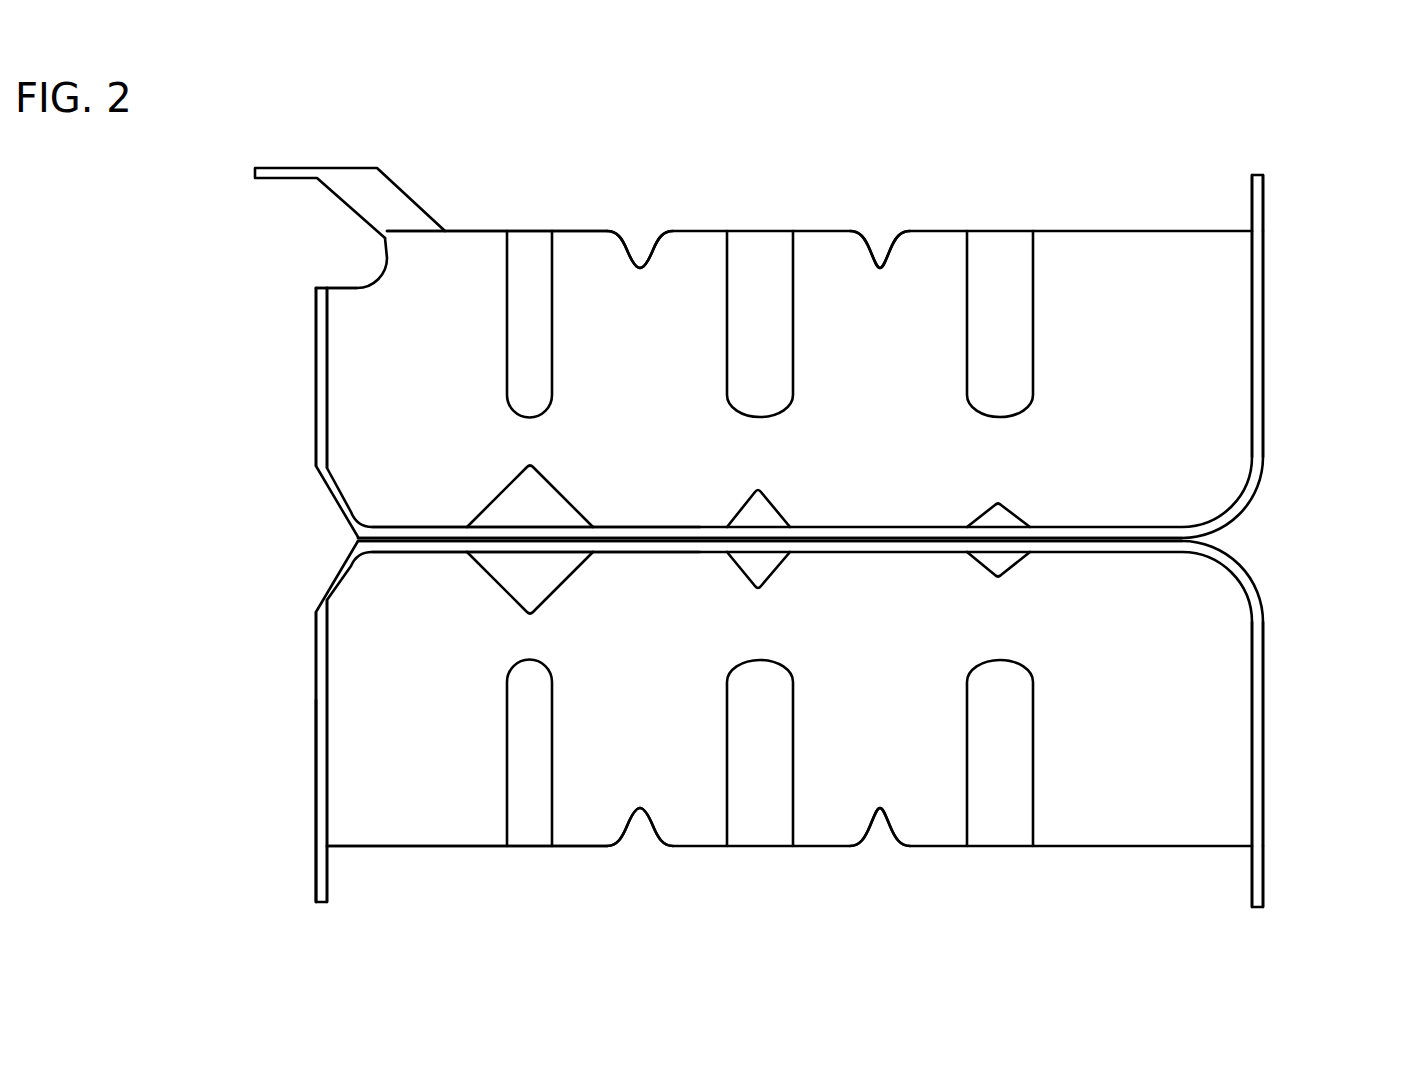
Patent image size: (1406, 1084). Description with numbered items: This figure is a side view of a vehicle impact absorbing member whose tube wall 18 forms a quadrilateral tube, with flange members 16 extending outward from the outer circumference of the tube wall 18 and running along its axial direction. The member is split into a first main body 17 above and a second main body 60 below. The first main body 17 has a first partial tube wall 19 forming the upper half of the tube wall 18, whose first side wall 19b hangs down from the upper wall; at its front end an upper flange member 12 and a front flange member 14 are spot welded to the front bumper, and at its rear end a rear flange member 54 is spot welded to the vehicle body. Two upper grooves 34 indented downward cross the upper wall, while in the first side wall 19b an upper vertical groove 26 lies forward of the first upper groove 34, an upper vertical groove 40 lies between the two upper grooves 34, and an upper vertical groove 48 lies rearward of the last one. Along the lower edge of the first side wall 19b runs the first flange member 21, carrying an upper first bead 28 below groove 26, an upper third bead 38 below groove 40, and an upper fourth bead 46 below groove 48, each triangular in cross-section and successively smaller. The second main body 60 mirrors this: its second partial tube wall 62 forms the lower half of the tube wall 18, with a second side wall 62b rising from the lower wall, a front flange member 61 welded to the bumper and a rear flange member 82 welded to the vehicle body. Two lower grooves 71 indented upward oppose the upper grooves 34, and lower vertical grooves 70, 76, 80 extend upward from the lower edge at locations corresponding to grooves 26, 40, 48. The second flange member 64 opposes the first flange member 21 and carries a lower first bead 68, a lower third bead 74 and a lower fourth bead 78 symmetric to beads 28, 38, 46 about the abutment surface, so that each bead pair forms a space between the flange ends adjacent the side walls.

The upper flange member 12 is at (288, 173).
The front flange member 14 is at (322, 395).
The flange members 16 is at (1121, 516).
The first main body 17 is at (295, 298).
The tube wall 18 is at (1357, 660).
The first partial tube wall 19 is at (447, 228).
The first side wall 19b is at (360, 353).
The first flange member 21 is at (387, 531).
The upper vertical groove 26 is at (508, 280).
The upper first bead 28 is at (570, 502).
The upper groove 34 is at (875, 250).
The upper third bead 38 is at (785, 512).
The upper vertical groove 40 is at (727, 280).
The upper fourth bead 46 is at (1025, 512).
The upper vertical groove 48 is at (968, 280).
The rear flange member 54 is at (1257, 202).
The second main body 60 is at (302, 888).
The front flange member 61 is at (323, 828).
The second partial tube wall 62 is at (352, 733).
The second side wall 62b is at (352, 787).
The second flange member 64 is at (417, 557).
The lower first bead 68 is at (503, 597).
The lower vertical groove 70 is at (508, 813).
The lower groove 71 is at (873, 822).
The lower third bead 74 is at (757, 576).
The lower vertical groove 76 is at (727, 813).
The lower fourth bead 78 is at (997, 572).
The lower vertical groove 80 is at (968, 813).
The rear flange member 82 is at (1255, 740).